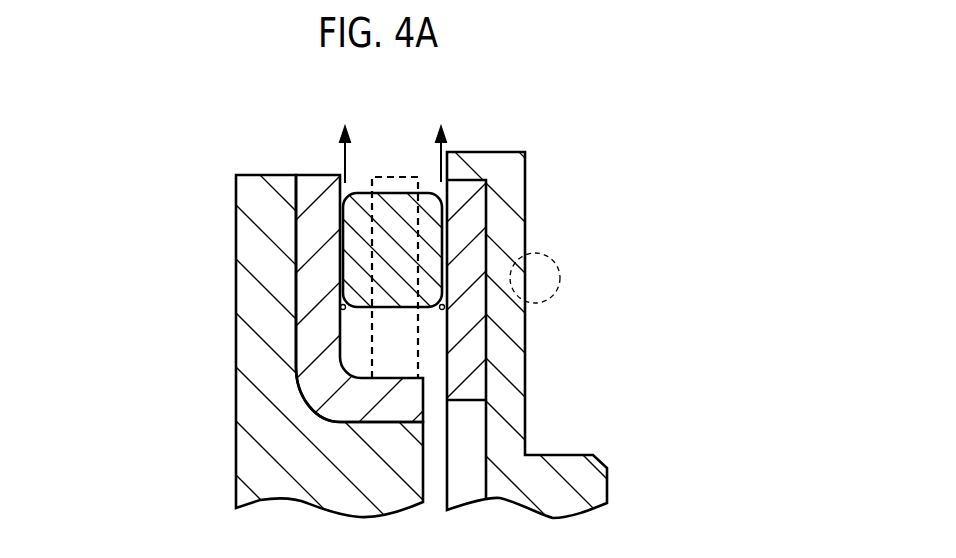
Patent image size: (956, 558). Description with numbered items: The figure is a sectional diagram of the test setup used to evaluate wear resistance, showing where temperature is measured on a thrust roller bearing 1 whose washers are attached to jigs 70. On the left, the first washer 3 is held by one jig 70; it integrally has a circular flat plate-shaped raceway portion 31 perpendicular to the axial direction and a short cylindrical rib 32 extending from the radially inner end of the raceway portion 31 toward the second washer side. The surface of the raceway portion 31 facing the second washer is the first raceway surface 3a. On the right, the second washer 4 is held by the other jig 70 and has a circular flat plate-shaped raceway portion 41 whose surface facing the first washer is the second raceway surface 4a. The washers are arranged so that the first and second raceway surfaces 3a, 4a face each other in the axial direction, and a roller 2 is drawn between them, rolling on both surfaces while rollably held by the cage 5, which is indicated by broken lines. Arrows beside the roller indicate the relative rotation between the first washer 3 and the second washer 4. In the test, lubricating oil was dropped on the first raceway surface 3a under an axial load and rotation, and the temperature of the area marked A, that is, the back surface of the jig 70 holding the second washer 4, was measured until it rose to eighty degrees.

The thrust roller bearing 1 is at (367, 320).
The roller 2 is at (398, 208).
The first washer 3 is at (367, 327).
The first raceway surface 3a is at (340, 309).
The second washer 4 is at (518, 329).
The second raceway surface 4a is at (447, 309).
The cage 5 is at (376, 177).
The raceway portion 31 is at (305, 247).
The rib 32 is at (365, 408).
The raceway portion 41 is at (473, 207).
The jig 70 is at (242, 437).
The temperature measurement area A is at (560, 283).